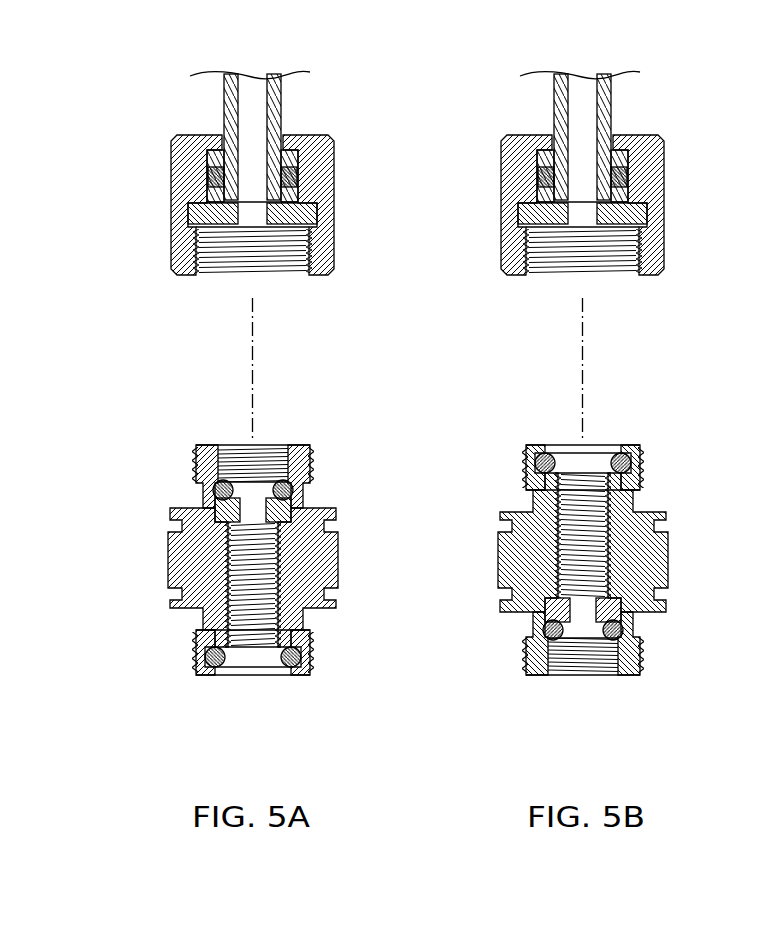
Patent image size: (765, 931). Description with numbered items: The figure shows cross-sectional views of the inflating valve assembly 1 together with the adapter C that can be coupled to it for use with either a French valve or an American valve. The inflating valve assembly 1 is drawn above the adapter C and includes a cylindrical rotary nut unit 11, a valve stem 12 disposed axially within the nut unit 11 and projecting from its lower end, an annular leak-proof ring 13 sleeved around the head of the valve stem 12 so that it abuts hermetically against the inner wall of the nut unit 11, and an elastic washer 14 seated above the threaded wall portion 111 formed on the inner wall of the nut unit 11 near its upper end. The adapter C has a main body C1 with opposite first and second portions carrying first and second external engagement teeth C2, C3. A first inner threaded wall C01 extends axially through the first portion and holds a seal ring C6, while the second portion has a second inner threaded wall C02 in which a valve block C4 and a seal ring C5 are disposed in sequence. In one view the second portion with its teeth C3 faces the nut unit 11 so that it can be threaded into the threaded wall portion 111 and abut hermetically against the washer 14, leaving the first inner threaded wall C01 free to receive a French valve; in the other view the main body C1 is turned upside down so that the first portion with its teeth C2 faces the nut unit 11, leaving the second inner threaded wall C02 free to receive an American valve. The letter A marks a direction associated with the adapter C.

In FIG. 5A, the inflating valve assembly 1 is at (268, 199).
In FIG. 5B, the inflating valve assembly 1 is at (592, 199).
In FIG. 5A, the rotary nut unit 11 is at (327, 182).
In FIG. 5B, the rotary nut unit 11 is at (652, 157).
In FIG. 5A, the valve stem 12 is at (272, 105).
In FIG. 5B, the valve stem 12 is at (602, 105).
In FIG. 5A, the annular leak-proof ring 13 is at (212, 180).
In FIG. 5B, the annular leak-proof ring 13 is at (542, 185).
In FIG. 5A, the elastic washer 14 is at (318, 214).
In FIG. 5B, the elastic washer 14 is at (647, 213).
In FIG. 5A, the threaded wall portion 111 is at (228, 247).
In FIG. 5B, the threaded wall portion 111 is at (558, 247).
In FIG. 5A, the adapter C is at (221, 567).
In FIG. 5B, the adapter C is at (569, 565).
In FIG. 5A, the main body C1 is at (168, 565).
In FIG. 5B, the main body C1 is at (664, 560).
In FIG. 5A, the first external engagement teeth C2 is at (311, 650).
In FIG. 5B, the first external engagement teeth C2 is at (640, 462).
In FIG. 5A, the second external engagement teeth C3 is at (196, 463).
In FIG. 5B, the second external engagement teeth C3 is at (640, 660).
In FIG. 5A, the valve block C4 is at (293, 505).
In FIG. 5B, the valve block C4 is at (540, 610).
In FIG. 5A, the seal ring C5 is at (312, 466).
In FIG. 5B, the seal ring C5 is at (626, 674).
In FIG. 5A, the seal ring C6 is at (292, 670).
In FIG. 5B, the seal ring C6 is at (542, 455).
In FIG. 5A, the first inner threaded wall C01 is at (253, 637).
In FIG. 5B, the first inner threaded wall C01 is at (583, 485).
In FIG. 5A, the second inner threaded wall C02 is at (228, 458).
In FIG. 5B, the second inner threaded wall C02 is at (582, 660).
In FIG. 5B, the direction A is at (752, 449).